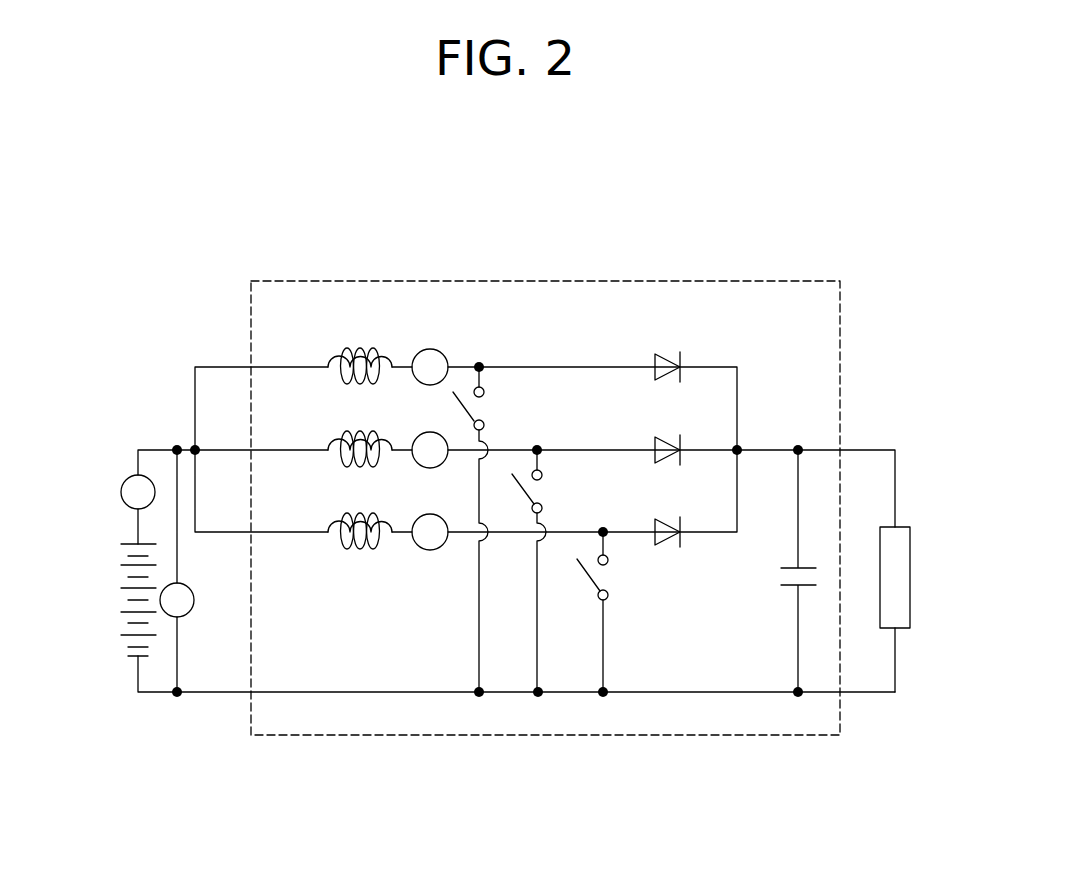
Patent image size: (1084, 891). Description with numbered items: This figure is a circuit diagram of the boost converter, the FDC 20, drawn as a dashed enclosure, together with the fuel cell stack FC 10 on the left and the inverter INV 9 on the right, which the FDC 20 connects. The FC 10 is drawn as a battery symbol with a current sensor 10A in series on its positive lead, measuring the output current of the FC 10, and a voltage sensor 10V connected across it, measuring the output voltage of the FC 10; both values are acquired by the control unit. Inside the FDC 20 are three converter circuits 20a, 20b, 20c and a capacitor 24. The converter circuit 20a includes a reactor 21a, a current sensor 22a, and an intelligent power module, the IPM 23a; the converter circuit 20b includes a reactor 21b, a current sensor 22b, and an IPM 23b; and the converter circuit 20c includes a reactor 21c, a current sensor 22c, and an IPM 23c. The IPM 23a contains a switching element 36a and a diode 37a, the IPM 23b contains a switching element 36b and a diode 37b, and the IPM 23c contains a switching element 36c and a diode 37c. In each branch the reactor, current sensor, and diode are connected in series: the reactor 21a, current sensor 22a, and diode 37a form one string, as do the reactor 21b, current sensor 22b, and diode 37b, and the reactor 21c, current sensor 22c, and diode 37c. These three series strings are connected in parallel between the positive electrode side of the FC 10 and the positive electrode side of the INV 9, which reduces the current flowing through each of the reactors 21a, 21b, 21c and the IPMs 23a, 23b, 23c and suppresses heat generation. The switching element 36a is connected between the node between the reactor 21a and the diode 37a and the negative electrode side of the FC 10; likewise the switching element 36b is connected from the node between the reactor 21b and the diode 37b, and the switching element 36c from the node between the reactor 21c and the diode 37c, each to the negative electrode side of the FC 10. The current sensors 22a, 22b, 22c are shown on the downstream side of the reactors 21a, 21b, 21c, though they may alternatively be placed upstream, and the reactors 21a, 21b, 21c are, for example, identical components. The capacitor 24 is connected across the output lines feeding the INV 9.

The inverter 9 is at (903, 527).
The fuel cell stack 10 is at (121, 596).
The current sensor 10A is at (121, 477).
The voltage sensor 10V is at (187, 587).
The boost converter 20 is at (780, 280).
The converter circuit 20a is at (504, 500).
The converter circuit 20b is at (520, 543).
The converter circuit 20c is at (528, 584).
The reactor 21a is at (358, 348).
The reactor 21b is at (358, 431).
The reactor 21c is at (358, 513).
The current sensor 22a is at (447, 356).
The current sensor 22b is at (431, 431).
The current sensor 22c is at (431, 513).
The intelligent power module 23a is at (566, 522).
The intelligent power module 23b is at (596, 563).
The intelligent power module 23c is at (646, 604).
The capacitor 24 is at (793, 578).
The switching element 36a is at (478, 412).
The switching element 36b is at (535, 494).
The switching element 36c is at (607, 571).
The diode 37a is at (655, 376).
The diode 37b is at (646, 462).
The diode 37c is at (660, 546).